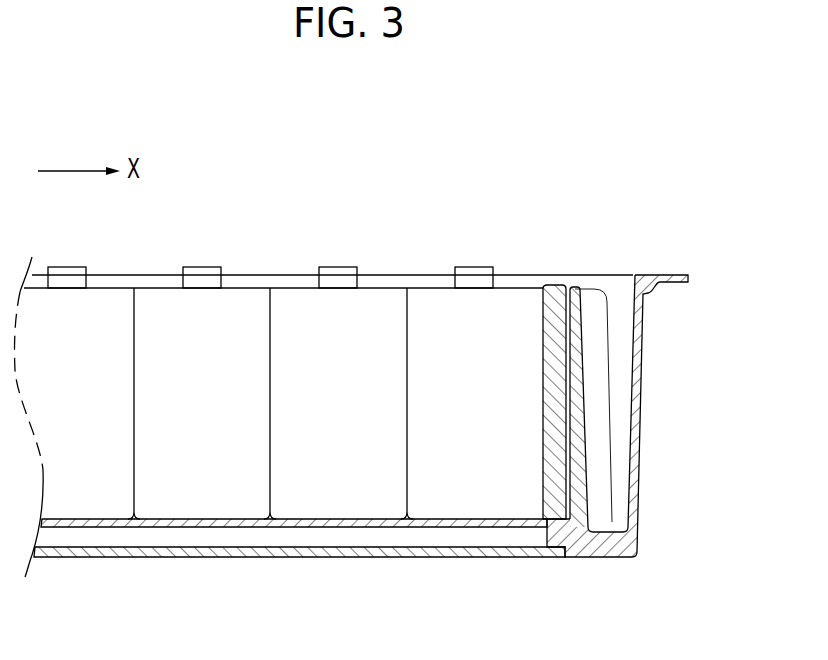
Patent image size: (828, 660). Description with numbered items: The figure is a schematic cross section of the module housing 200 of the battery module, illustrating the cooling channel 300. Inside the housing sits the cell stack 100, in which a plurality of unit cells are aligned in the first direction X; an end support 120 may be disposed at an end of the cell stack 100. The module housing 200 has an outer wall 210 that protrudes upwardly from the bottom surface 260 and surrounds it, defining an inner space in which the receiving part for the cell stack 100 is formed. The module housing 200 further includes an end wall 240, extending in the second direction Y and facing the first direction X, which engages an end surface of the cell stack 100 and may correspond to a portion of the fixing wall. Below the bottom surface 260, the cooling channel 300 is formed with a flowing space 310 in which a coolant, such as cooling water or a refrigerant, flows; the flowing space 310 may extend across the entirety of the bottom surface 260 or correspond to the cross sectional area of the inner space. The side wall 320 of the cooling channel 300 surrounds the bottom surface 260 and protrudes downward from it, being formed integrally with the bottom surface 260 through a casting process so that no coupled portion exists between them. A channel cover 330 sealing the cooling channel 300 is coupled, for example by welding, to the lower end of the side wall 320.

The cell stack 100 is at (427, 273).
The end support 120 is at (550, 290).
The module housing 200 is at (635, 379).
The outer wall 210 is at (638, 338).
The end wall 240 is at (574, 293).
The bottom surface 260 is at (367, 523).
The cooling channel 300 is at (316, 589).
The flowing space 310 is at (215, 540).
The side wall 320 is at (568, 537).
The channel cover 330 is at (505, 553).